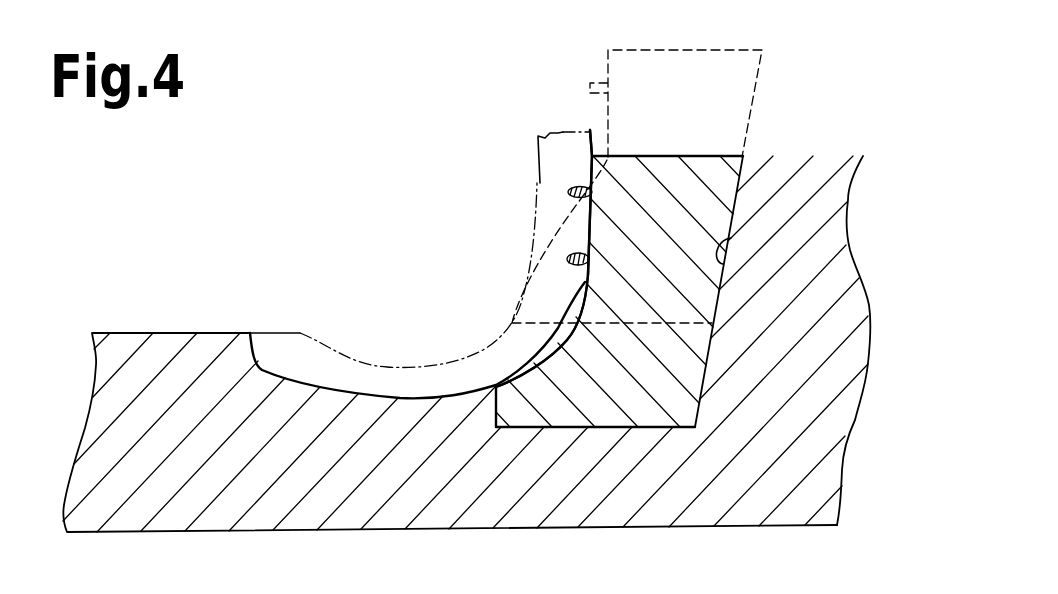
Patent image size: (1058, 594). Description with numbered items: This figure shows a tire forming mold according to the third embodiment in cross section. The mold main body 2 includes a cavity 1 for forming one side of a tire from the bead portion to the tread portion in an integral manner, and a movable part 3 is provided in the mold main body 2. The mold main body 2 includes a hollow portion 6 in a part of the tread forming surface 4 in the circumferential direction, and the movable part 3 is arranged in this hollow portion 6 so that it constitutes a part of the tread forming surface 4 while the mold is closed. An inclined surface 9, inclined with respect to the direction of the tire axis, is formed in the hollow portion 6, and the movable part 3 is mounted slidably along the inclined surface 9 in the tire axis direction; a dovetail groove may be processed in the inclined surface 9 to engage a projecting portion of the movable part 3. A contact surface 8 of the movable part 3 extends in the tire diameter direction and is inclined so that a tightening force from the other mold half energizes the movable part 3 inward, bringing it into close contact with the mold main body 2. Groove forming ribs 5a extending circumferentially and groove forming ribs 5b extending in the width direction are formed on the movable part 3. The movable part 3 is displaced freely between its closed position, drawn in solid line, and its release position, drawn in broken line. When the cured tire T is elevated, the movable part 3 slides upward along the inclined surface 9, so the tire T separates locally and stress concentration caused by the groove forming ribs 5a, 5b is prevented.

The cavity 1 is at (307, 357).
The mold main body 2 is at (203, 350).
The movable part 3 is at (713, 167).
The tread forming surface 4 is at (586, 164).
The groove forming ribs 5a is at (570, 191).
The groove forming ribs 5b is at (560, 305).
The hollow portion 6 is at (657, 380).
The contact surface 8 is at (603, 428).
The inclined surface 9 is at (730, 237).
The tire T is at (537, 150).